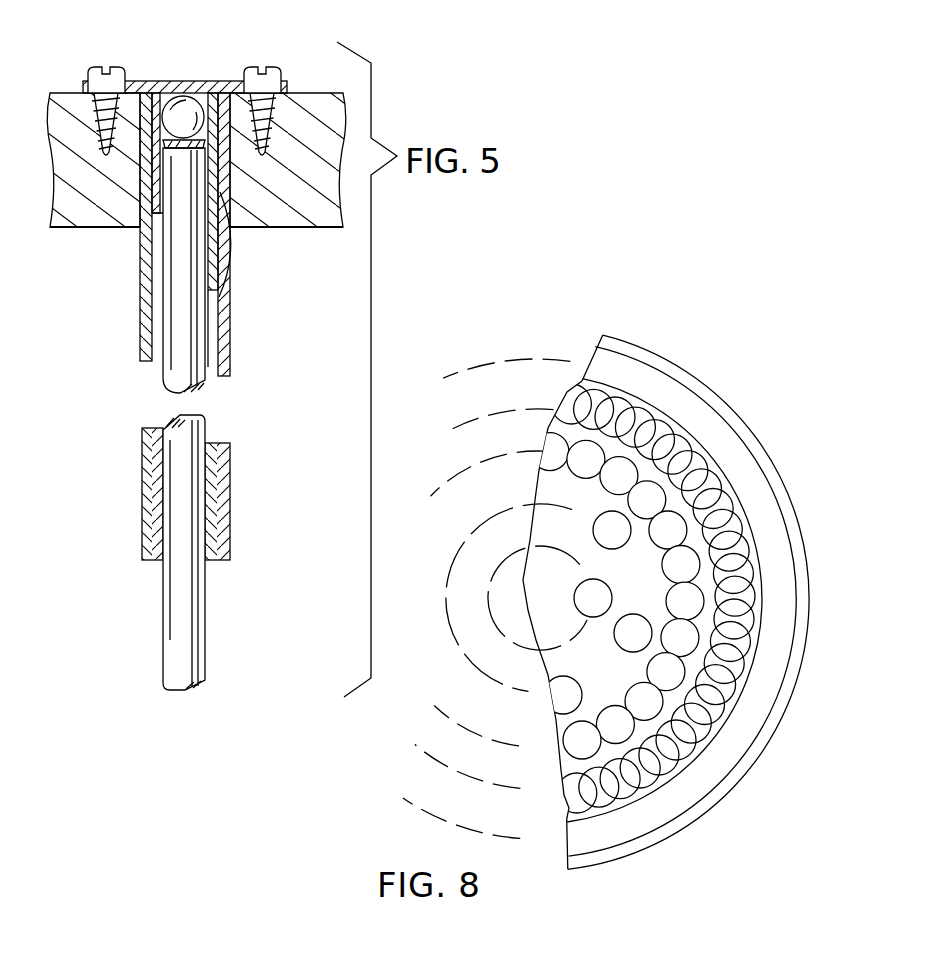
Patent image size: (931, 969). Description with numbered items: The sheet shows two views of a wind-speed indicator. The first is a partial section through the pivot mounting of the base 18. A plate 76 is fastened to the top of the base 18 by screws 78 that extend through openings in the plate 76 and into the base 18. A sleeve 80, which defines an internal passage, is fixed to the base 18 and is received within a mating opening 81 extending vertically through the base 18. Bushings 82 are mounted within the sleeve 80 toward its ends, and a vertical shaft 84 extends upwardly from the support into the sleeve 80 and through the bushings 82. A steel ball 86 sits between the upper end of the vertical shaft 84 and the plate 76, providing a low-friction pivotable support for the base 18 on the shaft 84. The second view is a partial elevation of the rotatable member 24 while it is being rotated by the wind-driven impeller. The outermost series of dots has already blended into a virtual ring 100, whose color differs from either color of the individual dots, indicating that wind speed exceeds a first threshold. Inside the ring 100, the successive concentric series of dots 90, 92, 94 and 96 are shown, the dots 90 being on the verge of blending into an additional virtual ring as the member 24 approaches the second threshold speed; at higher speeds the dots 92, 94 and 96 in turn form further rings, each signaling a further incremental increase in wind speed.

In FIG. 5, the base 18 is at (104, 234).
In FIG. 5, the plate 76 is at (230, 80).
In FIG. 5, the screws 78 is at (90, 70).
In FIG. 5, the sleeve 80 is at (232, 364).
In FIG. 5, the mating opening 81 is at (233, 242).
In FIG. 5, the bushings 82 is at (231, 285).
In FIG. 5, the vertical shaft 84 is at (207, 622).
In FIG. 5, the steel ball 86 is at (165, 97).
In FIG. 8, the rotatable member 24 is at (774, 454).
In FIG. 8, the dots 90 is at (706, 727).
In FIG. 8, the dots 92 is at (668, 594).
In FIG. 8, the dots 94 is at (627, 648).
In FIG. 8, the dots 96 is at (578, 588).
In FIG. 8, the virtual ring 100 is at (790, 543).